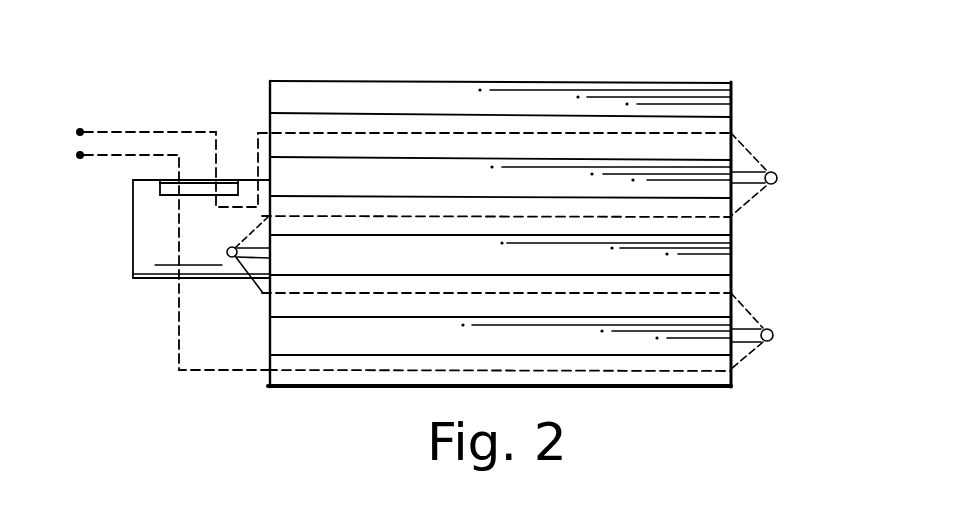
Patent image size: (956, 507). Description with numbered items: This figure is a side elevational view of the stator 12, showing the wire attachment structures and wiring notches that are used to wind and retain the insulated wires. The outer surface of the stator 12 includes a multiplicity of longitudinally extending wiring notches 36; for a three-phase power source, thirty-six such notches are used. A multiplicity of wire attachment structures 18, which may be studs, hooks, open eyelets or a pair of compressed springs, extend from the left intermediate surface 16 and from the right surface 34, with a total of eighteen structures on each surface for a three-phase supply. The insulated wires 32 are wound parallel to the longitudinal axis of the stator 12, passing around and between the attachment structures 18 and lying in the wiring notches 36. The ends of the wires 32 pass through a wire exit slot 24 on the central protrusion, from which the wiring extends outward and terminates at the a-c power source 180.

The stator 12 is at (345, 81).
The left intermediate surface 16 is at (268, 340).
The wire attachment structures 18 is at (229, 247).
The wire exit slot 24 is at (228, 187).
The insulated wires 32 is at (528, 133).
The right surface 34 is at (733, 122).
The wiring notches 36 is at (701, 128).
The a-c power source 180 is at (137, 244).